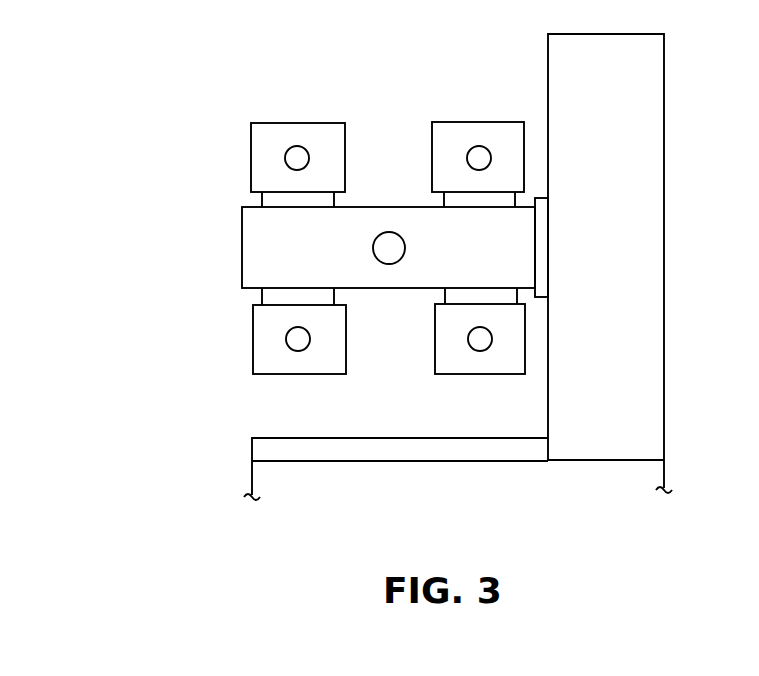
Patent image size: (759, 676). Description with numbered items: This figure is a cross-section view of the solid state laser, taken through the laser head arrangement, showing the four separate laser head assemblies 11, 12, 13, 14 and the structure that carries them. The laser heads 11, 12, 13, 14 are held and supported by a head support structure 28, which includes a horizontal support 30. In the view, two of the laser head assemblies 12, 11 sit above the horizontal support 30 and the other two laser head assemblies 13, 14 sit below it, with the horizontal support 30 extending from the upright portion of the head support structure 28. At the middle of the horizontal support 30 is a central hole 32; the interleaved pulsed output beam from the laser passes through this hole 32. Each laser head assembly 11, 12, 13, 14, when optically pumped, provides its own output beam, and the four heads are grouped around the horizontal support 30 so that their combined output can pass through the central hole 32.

The laser head assembly 11 is at (447, 122).
The laser head assembly 12 is at (275, 123).
The laser head assembly 13 is at (265, 374).
The laser head assembly 14 is at (462, 374).
The head support structure 28 is at (661, 115).
The horizontal support 30 is at (242, 245).
The central hole 32 is at (405, 245).